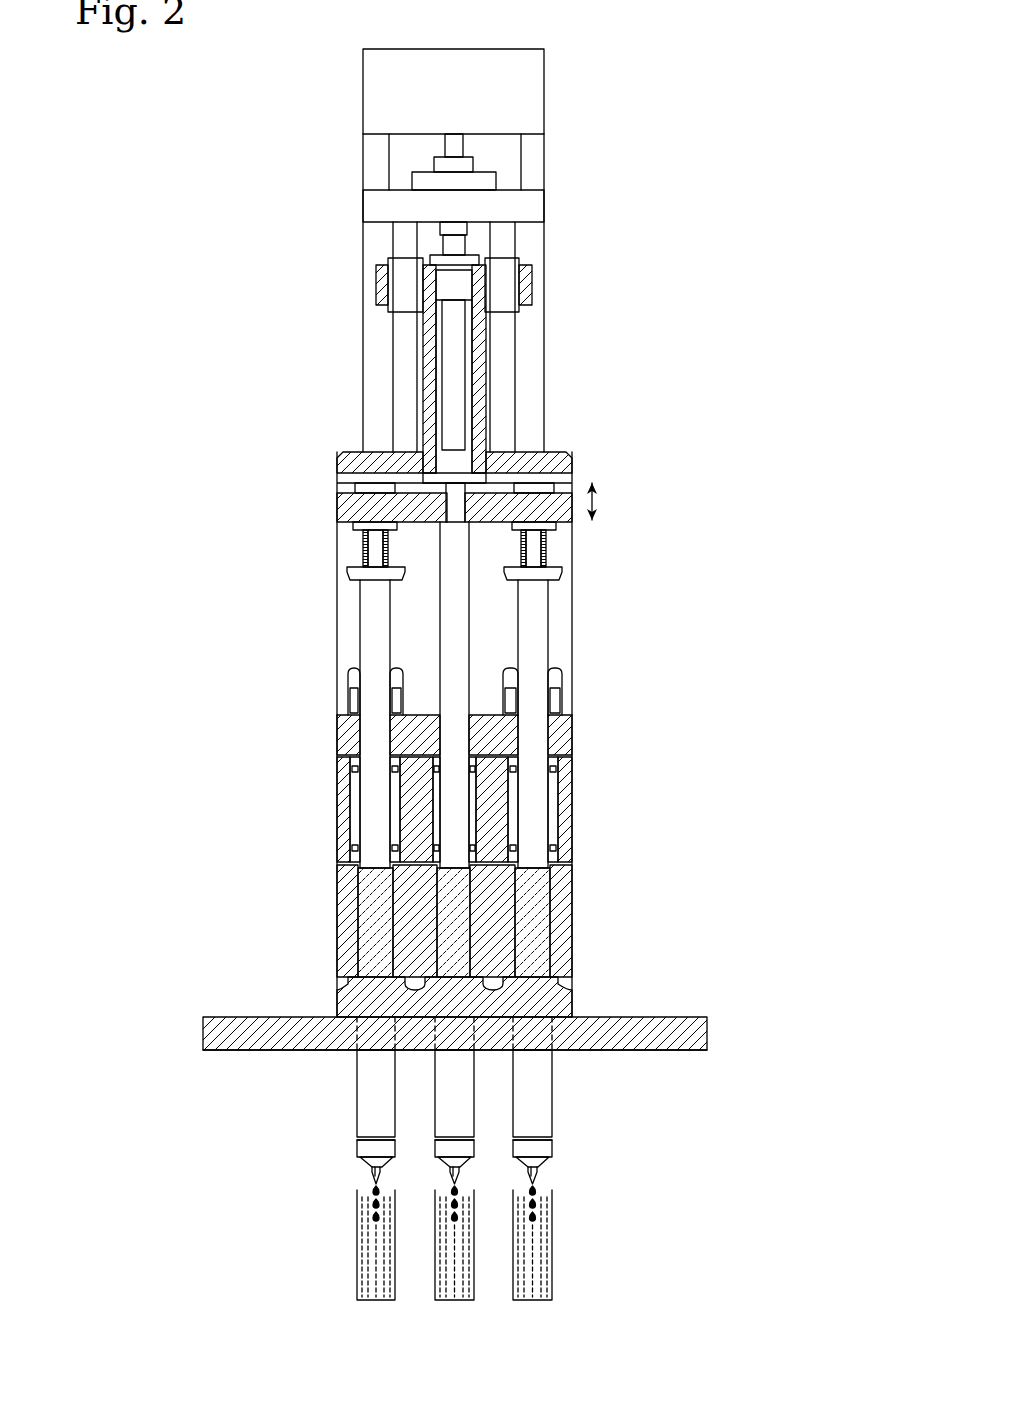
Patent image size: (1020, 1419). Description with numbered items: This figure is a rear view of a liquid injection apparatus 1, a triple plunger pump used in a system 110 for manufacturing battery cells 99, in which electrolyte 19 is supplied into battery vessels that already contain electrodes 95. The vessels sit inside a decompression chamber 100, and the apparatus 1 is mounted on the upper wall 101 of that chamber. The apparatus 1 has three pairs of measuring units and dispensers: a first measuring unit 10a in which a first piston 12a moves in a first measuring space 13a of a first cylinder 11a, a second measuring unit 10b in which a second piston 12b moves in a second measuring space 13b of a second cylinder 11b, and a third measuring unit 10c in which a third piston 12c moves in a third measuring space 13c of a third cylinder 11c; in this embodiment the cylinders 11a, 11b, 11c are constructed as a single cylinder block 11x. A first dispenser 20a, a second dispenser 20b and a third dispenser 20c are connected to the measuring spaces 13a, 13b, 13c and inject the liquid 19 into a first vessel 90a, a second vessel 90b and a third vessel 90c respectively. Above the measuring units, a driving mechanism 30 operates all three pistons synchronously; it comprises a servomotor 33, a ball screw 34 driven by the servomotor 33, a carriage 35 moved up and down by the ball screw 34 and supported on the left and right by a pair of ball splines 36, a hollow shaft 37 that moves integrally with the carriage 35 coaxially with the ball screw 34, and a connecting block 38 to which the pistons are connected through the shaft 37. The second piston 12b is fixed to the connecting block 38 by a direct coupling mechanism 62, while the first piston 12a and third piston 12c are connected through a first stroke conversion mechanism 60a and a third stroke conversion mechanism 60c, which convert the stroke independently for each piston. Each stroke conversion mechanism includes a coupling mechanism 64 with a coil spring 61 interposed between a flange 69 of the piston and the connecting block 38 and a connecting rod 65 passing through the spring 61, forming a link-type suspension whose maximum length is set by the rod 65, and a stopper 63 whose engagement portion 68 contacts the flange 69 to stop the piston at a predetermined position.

The liquid injection apparatus 1 is at (650, 218).
The driving mechanism 30 is at (657, 272).
The servomotor 33 is at (533, 97).
The ball screw 34 is at (456, 347).
The carriage 35 is at (528, 290).
The ball splines 36 is at (498, 270).
The hollow shaft 37 is at (480, 398).
The connecting block 38 is at (570, 480).
The direct coupling mechanism 62 is at (437, 555).
The coupling mechanism 64 is at (318, 510).
The spring 61 is at (370, 540).
The connecting rod 65 is at (373, 553).
The flange 69 is at (365, 576).
The first stroke conversion mechanism 60a is at (592, 603).
The third stroke conversion mechanism 60c is at (318, 603).
The stopper 63 is at (305, 681).
The engagement portion 68 is at (352, 700).
The first piston 12a is at (533, 800).
The second piston 12b is at (452, 690).
The third piston 12c is at (372, 727).
The first measuring unit 10a is at (580, 906).
The second measuring unit 10b is at (478, 898).
The third measuring unit 10c is at (313, 855).
The first measuring space 13a is at (542, 955).
The second measuring space 13b is at (455, 922).
The third measuring space 13c is at (362, 895).
The first cylinder 11a is at (558, 966).
The second cylinder 11b is at (493, 945).
The third cylinder 11c is at (345, 935).
The cylinder block 11x is at (328, 957).
The system 110 is at (700, 1003).
The upper wall 101 is at (693, 1050).
The decompression chamber 100 is at (657, 1102).
The first dispenser 20a is at (537, 1112).
The second dispenser 20b is at (447, 1073).
The third dispenser 20c is at (370, 1122).
The electrolyte 19 is at (533, 1203).
The battery cells 99 is at (558, 1225).
The electrodes 95 is at (543, 1265).
The first vessel 90a is at (553, 1290).
The second vessel 90b is at (435, 1278).
The third vessel 90c is at (357, 1265).